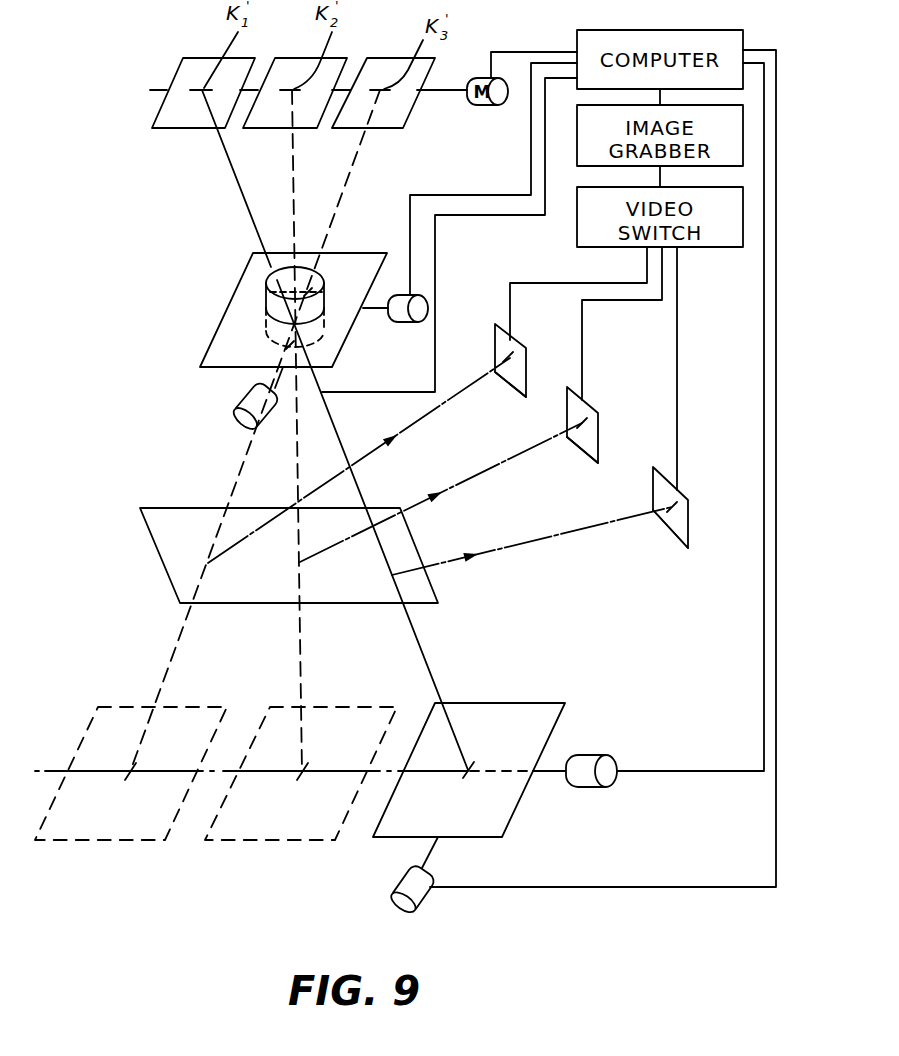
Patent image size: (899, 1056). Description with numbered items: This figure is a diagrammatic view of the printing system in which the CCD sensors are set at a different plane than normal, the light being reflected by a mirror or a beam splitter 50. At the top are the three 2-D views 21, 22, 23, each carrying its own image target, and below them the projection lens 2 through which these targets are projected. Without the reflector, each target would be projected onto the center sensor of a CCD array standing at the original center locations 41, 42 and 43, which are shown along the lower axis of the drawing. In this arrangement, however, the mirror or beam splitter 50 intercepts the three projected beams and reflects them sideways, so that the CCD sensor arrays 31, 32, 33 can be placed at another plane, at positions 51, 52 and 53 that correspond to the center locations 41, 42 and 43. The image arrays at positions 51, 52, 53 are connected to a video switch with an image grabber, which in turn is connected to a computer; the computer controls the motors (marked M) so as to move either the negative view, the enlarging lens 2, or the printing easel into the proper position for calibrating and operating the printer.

The projection lens 2 is at (267, 298).
The 2-D view 21 is at (193, 58).
The 2-D view 22 is at (287, 58).
The 2-D view 23 is at (380, 58).
The CCD sensor array 31 is at (680, 500).
The CCD sensor array 32 is at (588, 418).
The CCD sensor array 33 is at (515, 352).
The center location 41 is at (484, 840).
The center location 42 is at (267, 842).
The center location 43 is at (117, 842).
The mirror or beam splitter 50 is at (167, 535).
The image array plane 51 is at (667, 530).
The image array plane 52 is at (580, 450).
The image array plane 53 is at (507, 383).